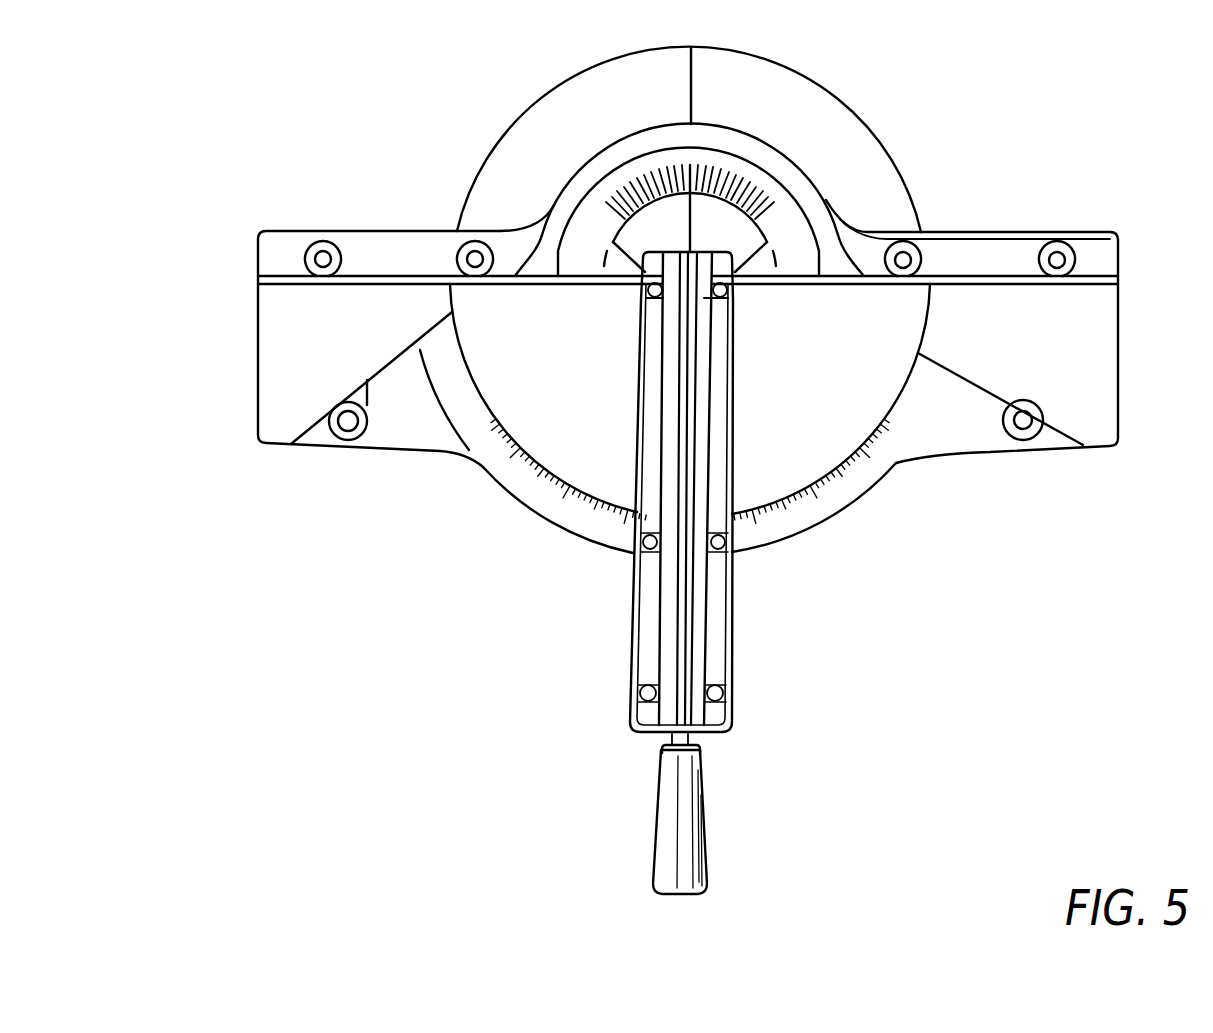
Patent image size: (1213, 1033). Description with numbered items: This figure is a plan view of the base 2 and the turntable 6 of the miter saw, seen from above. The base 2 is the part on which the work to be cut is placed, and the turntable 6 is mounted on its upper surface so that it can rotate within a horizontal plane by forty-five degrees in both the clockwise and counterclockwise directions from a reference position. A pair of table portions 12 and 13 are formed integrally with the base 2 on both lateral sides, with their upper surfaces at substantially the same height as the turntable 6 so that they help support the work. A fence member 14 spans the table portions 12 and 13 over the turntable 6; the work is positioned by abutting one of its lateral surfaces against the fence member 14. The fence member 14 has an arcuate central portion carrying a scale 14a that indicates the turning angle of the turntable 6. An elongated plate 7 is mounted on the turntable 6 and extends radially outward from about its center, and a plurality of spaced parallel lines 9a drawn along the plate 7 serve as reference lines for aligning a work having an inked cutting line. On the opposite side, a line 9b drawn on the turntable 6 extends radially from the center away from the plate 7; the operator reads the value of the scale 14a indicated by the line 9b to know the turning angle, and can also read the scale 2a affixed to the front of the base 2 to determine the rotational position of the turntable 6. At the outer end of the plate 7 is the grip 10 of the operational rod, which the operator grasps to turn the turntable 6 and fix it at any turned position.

The base 2 is at (467, 465).
The scale 2a is at (832, 495).
The turntable 6 is at (870, 387).
The elongated plate 7 is at (720, 617).
The parallel lines 9a is at (657, 640).
The line 9b is at (693, 88).
The grip 10 is at (688, 822).
The table portion 12 is at (1105, 353).
The table portion 13 is at (287, 353).
The fence member 14 is at (990, 245).
The scale 14a is at (742, 172).